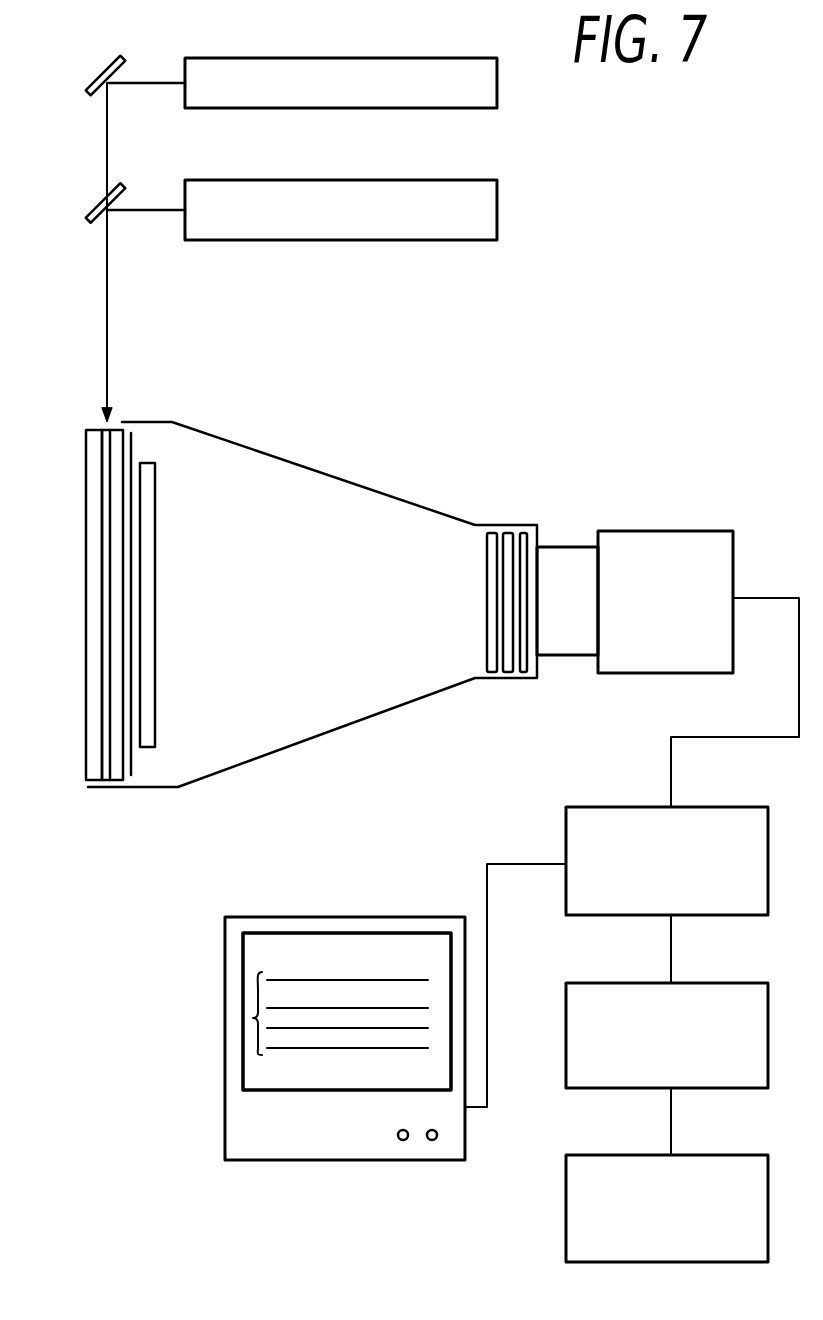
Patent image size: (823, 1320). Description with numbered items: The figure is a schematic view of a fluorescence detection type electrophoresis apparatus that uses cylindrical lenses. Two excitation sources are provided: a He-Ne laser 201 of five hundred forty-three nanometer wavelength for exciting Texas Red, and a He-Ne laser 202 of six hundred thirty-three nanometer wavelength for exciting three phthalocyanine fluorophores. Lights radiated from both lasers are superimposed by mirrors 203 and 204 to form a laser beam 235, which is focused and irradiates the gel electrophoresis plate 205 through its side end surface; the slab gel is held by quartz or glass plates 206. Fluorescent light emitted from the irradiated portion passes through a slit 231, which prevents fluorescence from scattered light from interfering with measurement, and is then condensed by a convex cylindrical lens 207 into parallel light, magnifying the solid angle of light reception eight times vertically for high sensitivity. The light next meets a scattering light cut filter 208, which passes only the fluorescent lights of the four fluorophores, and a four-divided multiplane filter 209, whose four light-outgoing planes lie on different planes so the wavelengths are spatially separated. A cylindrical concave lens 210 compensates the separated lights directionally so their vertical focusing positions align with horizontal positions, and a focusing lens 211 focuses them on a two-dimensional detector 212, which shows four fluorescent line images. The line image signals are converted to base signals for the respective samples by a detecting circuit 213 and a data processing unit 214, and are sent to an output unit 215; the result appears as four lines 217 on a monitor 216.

The He-Ne laser 201 is at (476, 57).
The He-Ne laser 202 is at (476, 179).
The mirror 203 is at (119, 58).
The mirror 204 is at (120, 184).
The laser beam 235 is at (109, 336).
The quartz or glass plates 206 is at (88, 465).
The gel electrophoresis plate 205 is at (103, 490).
The slit 231 is at (130, 523).
The convex cylindrical lens 207 is at (148, 552).
The scattering light cut filter 208 is at (492, 533).
The four-divided multiplane filter 209 is at (508, 533).
The cylindrical concave lens 210 is at (523, 533).
The focusing lens 211 is at (580, 565).
The two-dimensional detector 212 is at (712, 552).
The detecting circuit 213 is at (748, 824).
The memory unit 214 is at (745, 1004).
The output unit 215 is at (743, 1173).
The monitor 216 is at (252, 1120).
The four lines 217 is at (252, 1018).